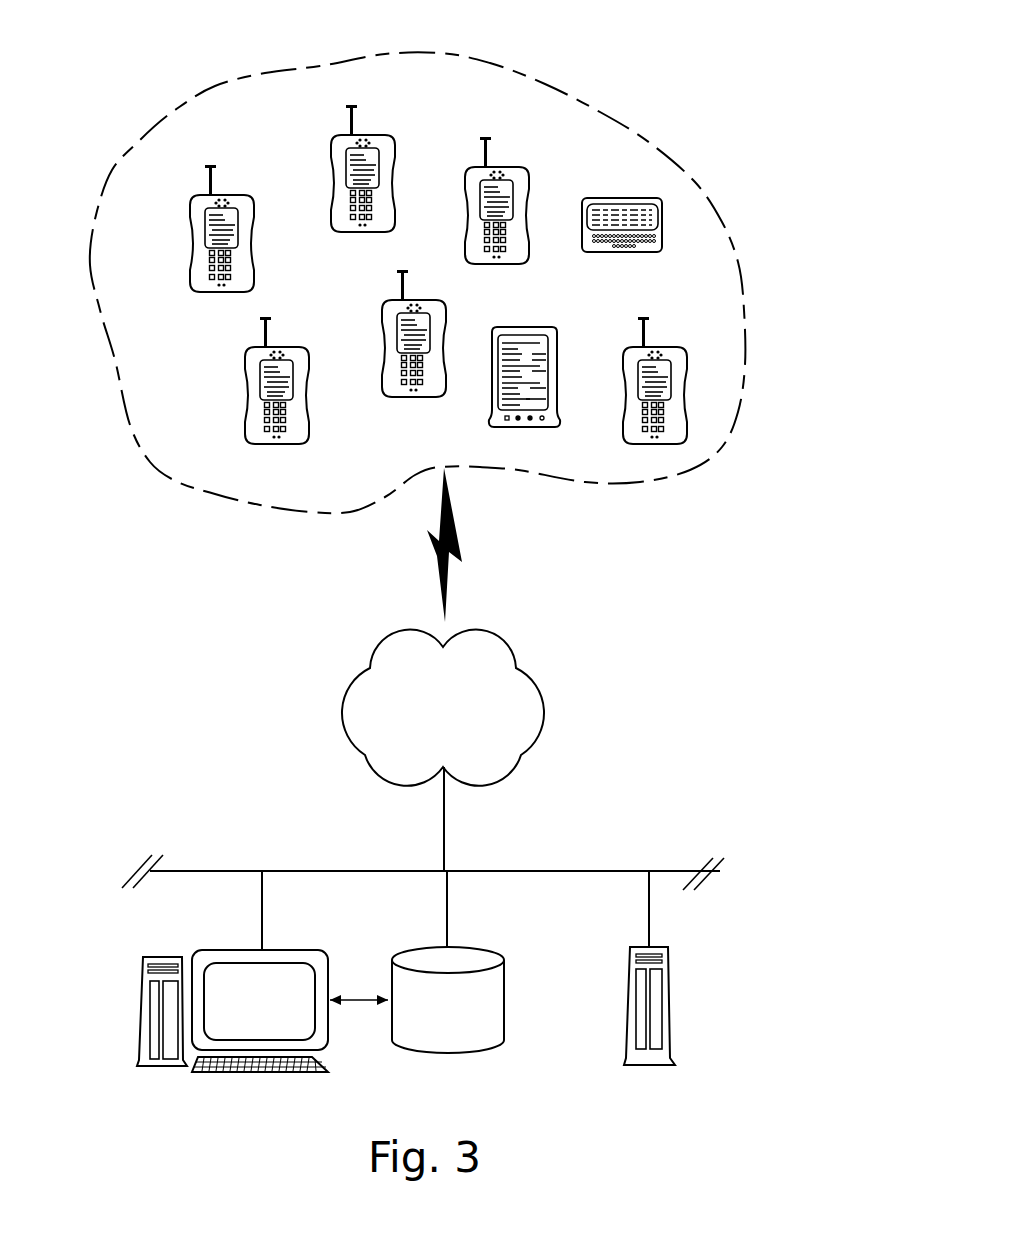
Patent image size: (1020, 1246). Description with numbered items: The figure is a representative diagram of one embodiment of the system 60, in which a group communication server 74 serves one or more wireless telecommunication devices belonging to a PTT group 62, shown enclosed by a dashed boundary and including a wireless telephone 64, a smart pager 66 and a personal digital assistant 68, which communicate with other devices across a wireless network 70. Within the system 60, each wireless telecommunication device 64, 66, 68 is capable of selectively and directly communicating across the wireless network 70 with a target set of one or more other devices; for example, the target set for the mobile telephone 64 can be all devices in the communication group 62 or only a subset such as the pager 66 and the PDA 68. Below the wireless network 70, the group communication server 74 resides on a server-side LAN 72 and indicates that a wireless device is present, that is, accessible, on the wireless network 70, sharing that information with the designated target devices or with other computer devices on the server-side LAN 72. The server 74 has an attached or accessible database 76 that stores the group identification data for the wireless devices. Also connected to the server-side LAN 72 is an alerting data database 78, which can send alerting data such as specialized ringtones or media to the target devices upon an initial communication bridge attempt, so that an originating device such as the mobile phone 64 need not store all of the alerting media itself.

The system 60 is at (683, 66).
The PTT group 62 is at (178, 484).
The wireless telephone 64 is at (383, 135).
The smart pager 66 is at (627, 252).
The personal digital assistant (PDA) 68 is at (492, 397).
The wireless network 70 is at (546, 707).
The server-side LAN 72 is at (228, 870).
The group communication server 74 is at (236, 950).
The database 76 is at (505, 1002).
The alerting data database 78 is at (673, 995).